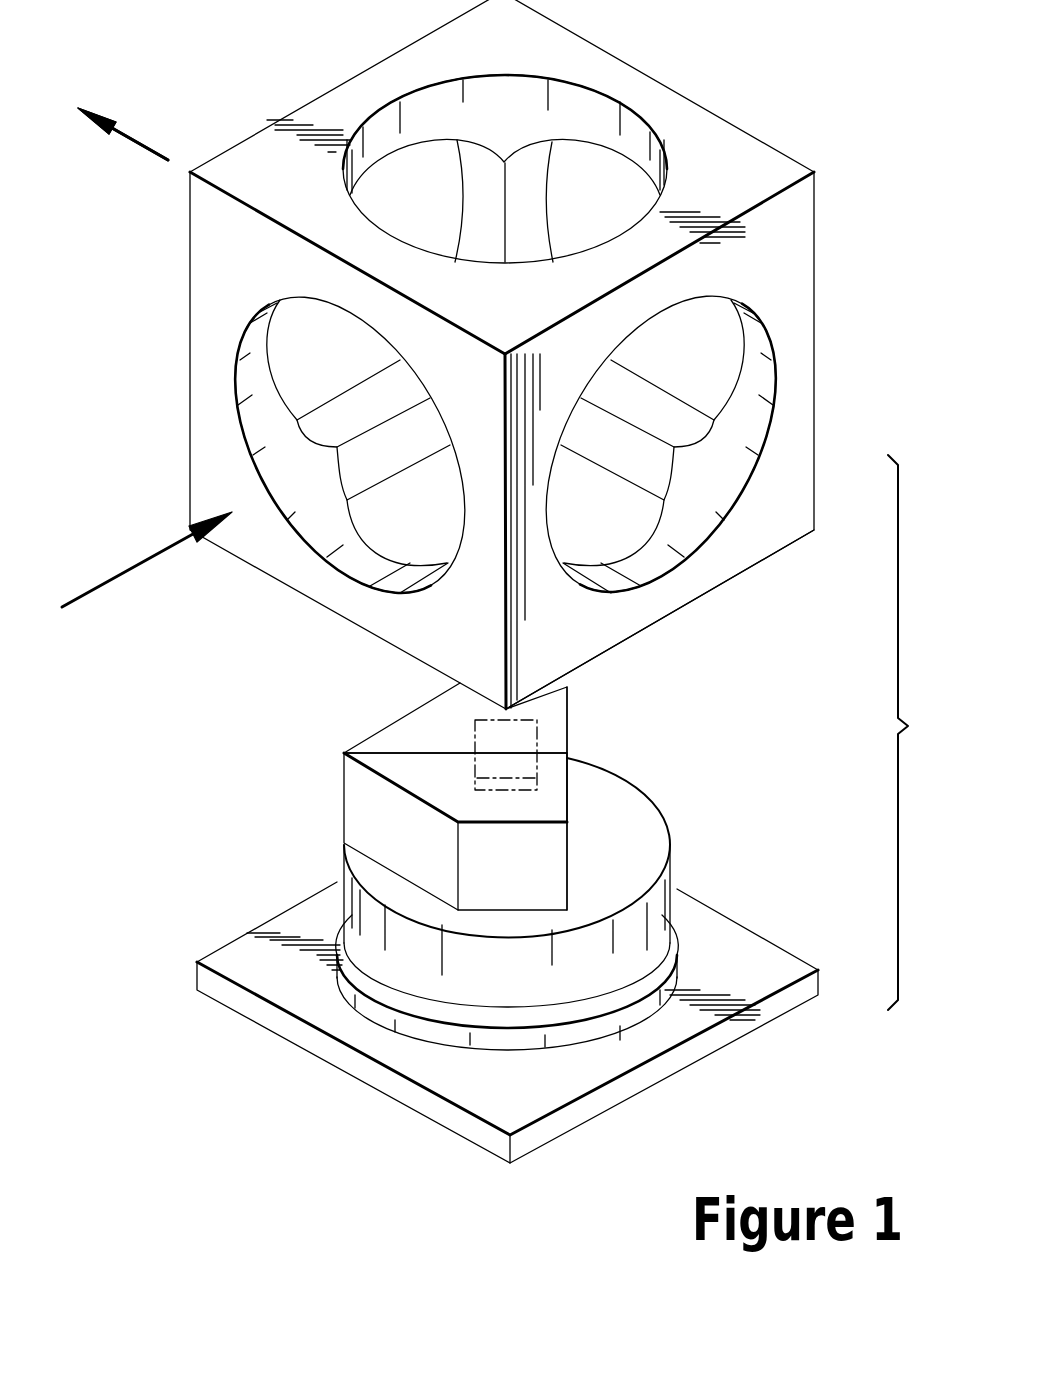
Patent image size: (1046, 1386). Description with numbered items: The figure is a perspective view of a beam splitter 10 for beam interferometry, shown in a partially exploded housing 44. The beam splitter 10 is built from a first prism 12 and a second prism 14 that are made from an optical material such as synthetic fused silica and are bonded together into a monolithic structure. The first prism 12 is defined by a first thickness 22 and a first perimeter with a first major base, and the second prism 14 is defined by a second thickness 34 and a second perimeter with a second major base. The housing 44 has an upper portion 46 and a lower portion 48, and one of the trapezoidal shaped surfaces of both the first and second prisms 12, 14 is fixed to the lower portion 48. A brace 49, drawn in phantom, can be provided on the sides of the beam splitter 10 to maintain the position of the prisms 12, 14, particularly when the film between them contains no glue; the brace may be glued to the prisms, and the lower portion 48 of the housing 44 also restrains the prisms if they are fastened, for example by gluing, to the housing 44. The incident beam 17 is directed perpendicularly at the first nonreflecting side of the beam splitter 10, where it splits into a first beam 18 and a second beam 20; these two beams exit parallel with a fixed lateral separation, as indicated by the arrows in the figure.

The beam splitter 10 is at (332, 736).
The first prism 12 is at (566, 867).
The second prism 14 is at (568, 712).
The incident beam 17 is at (155, 582).
The first beam 18 is at (157, 123).
The second beam 20 is at (157, 123).
The first thickness 22 is at (458, 870).
The second thickness 34 is at (568, 787).
The housing 44 is at (777, 553).
The upper portion 46 is at (747, 133).
The lower portion 48 is at (760, 930).
The brace 49 is at (473, 728).